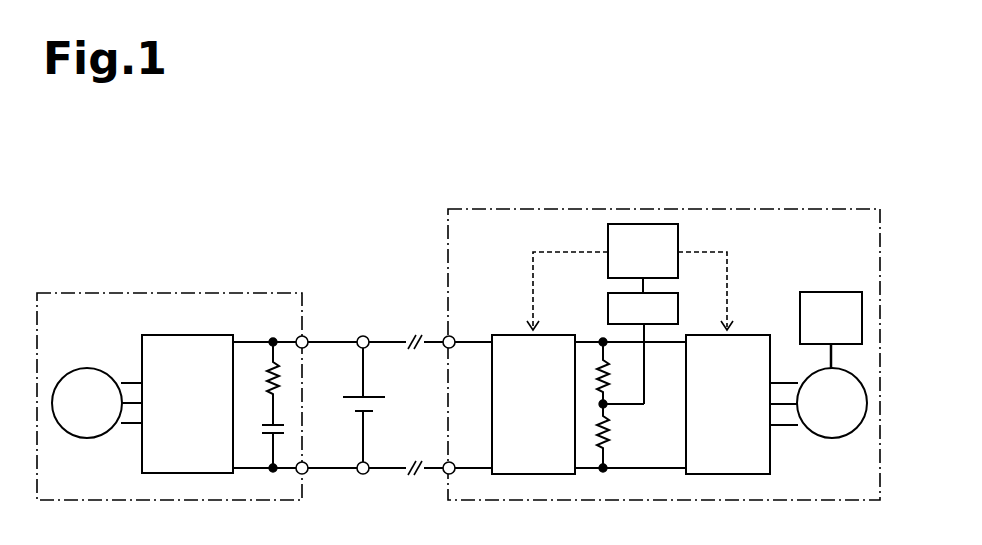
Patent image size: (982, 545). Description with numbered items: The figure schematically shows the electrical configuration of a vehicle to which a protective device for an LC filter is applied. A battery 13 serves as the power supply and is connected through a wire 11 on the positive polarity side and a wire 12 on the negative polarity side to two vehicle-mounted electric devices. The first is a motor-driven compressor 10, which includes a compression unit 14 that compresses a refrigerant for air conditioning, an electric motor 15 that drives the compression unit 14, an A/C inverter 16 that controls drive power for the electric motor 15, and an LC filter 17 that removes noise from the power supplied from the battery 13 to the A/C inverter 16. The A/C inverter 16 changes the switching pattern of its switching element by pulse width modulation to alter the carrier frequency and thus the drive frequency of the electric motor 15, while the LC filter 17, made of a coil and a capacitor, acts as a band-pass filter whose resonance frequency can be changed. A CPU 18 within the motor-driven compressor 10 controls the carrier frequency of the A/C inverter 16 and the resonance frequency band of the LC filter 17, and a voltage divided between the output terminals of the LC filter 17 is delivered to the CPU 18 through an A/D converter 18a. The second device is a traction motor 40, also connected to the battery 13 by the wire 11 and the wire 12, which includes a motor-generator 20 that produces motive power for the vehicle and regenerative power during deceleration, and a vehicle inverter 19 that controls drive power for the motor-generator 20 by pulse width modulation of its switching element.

The motor-driven compressor 10 is at (490, 209).
The wire on the positive polarity side 11 is at (392, 342).
The wire on the negative polarity side 12 is at (392, 468).
The battery 13 is at (356, 396).
The compression unit 14 is at (829, 292).
The electric motor 15 is at (831, 438).
The A/C inverter 16 is at (728, 474).
The LC filter 17 is at (535, 474).
The central processing unit (CPU) 18 is at (650, 224).
The A/D converter 18a is at (700, 300).
The vehicle inverter 19 is at (193, 473).
The motor-generator 20 is at (86, 438).
The traction motor 40 is at (90, 293).